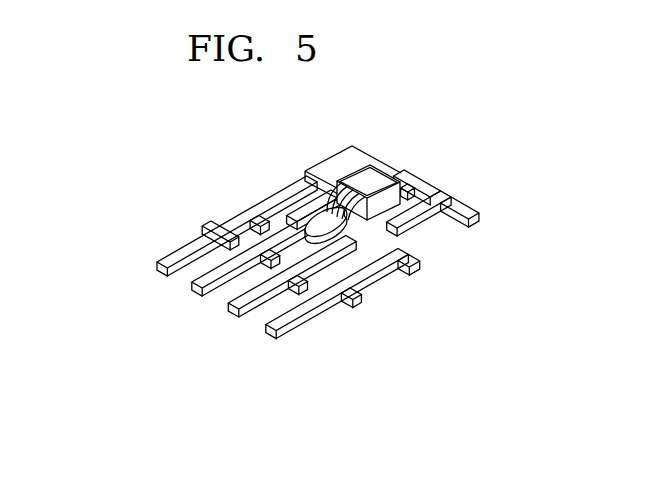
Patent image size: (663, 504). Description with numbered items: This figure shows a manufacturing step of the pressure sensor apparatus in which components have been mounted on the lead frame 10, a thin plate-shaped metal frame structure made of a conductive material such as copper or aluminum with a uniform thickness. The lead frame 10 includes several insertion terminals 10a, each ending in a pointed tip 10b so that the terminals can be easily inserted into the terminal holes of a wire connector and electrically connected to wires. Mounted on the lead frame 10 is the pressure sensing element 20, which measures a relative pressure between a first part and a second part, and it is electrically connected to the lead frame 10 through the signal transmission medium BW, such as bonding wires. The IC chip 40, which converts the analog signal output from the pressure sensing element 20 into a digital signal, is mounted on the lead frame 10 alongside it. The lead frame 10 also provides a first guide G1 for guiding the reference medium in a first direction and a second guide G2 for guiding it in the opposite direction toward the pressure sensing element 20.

The lead frame 10 is at (136, 344).
The insertion terminals 10a is at (283, 318).
The pointed tips 10b is at (158, 263).
The pressure sensing element 20 is at (360, 178).
The IC chip 40 is at (318, 222).
The signal transmission medium BW is at (332, 183).
The first guide G1 is at (444, 215).
The second guide G2 is at (406, 188).